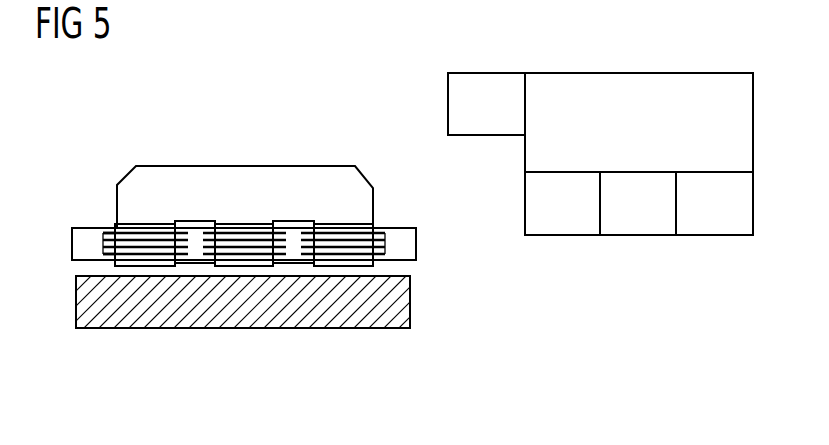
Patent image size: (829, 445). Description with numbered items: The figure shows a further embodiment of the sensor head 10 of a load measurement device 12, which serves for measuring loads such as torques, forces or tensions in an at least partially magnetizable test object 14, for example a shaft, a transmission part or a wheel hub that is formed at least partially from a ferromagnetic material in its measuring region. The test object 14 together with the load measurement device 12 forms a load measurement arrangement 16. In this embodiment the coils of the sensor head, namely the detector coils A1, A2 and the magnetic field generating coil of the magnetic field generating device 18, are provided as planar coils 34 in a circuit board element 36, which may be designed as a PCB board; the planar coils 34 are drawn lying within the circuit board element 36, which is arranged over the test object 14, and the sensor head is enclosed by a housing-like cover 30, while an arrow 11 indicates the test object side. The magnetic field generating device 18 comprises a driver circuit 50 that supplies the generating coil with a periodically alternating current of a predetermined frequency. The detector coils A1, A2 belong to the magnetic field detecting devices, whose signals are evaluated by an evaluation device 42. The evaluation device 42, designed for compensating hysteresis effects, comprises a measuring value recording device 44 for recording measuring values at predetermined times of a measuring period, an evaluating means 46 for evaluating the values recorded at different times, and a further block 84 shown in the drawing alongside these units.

The sensor head 10 is at (208, 138).
The carrier 11 is at (258, 362).
The load measurement device 12 is at (328, 110).
The test object 14 is at (140, 318).
The load measurement arrangement 16 is at (88, 147).
The magnetic field generating device 18 is at (225, 232).
The housing 30 is at (260, 177).
The planar coils 34 is at (168, 227).
The circuit board element 36 is at (414, 245).
The evaluation device 42 is at (655, 136).
The measuring value recording device 44 is at (579, 218).
The evaluating means 46 is at (653, 218).
The driver circuit 50 is at (502, 121).
The communication unit 84 is at (730, 220).
The detector coil A1 is at (115, 227).
The detector coil A2 is at (373, 227).